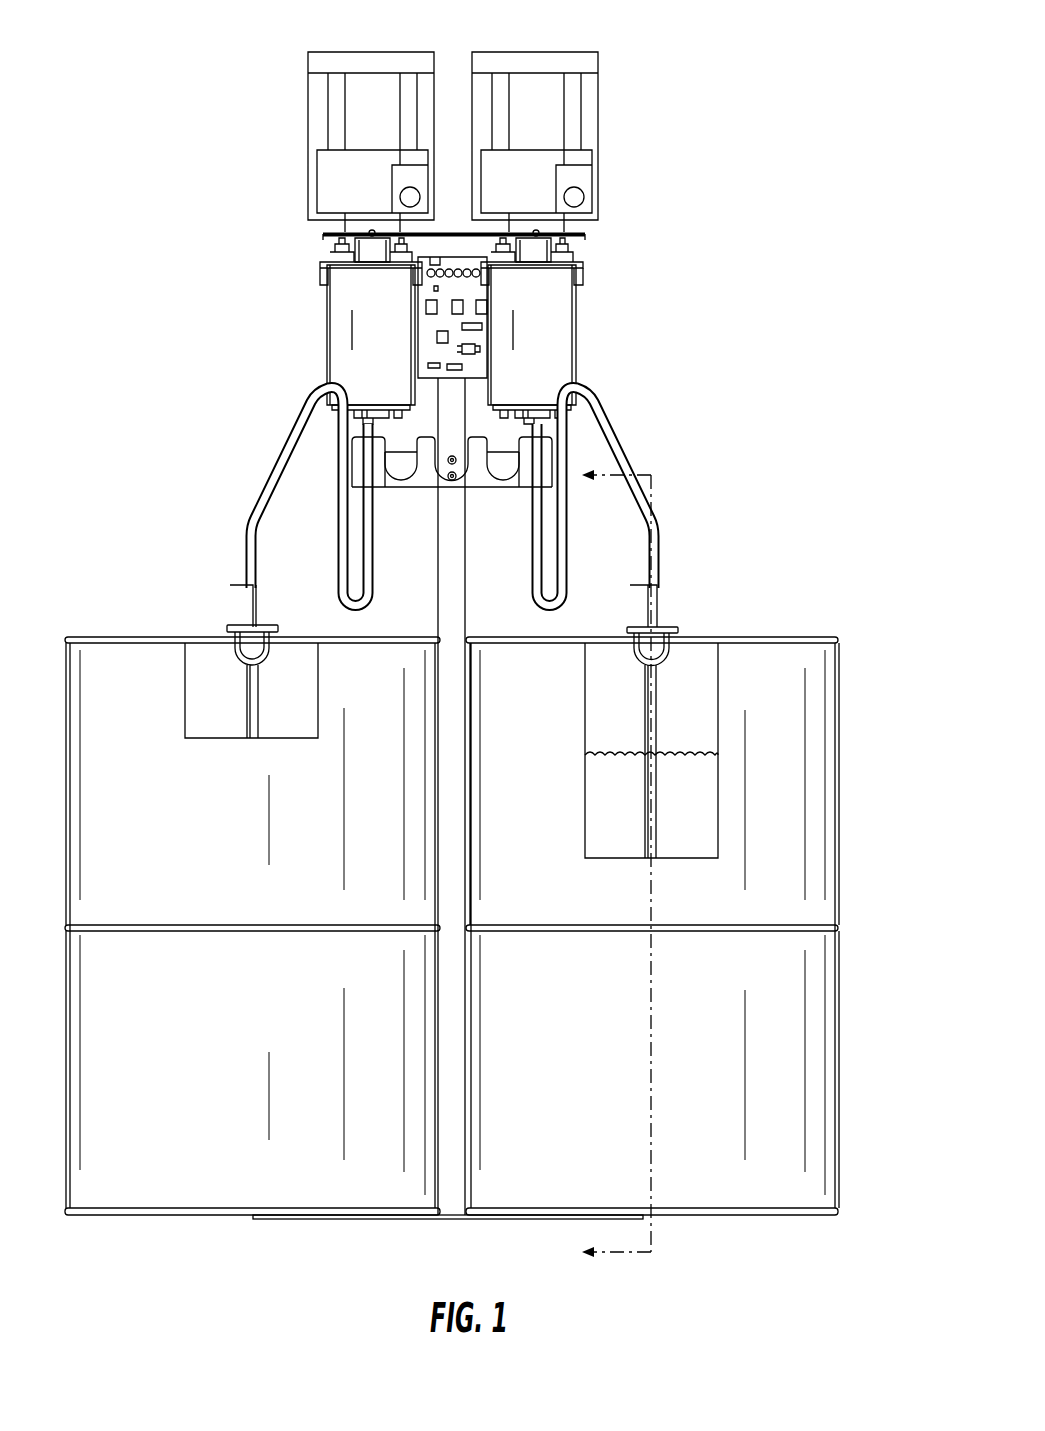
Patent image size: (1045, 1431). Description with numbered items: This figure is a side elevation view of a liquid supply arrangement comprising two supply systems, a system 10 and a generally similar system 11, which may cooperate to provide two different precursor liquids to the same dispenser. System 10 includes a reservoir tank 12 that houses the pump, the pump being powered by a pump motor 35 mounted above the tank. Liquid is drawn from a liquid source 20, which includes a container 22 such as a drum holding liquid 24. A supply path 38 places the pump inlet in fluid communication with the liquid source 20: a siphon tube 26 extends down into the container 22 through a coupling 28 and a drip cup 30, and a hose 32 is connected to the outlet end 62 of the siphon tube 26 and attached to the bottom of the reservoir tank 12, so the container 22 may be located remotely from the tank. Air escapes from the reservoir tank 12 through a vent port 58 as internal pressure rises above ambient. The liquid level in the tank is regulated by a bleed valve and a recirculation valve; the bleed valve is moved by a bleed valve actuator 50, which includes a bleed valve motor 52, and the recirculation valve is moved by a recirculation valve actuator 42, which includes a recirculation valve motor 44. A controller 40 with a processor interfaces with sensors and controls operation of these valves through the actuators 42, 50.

The system 10 is at (485, 654).
The system 11 is at (429, 611).
The reservoir tank 12 is at (594, 215).
The liquid source 20 is at (686, 886).
The container 22 is at (770, 1012).
The liquid 24 is at (690, 784).
The siphon tube 26 is at (652, 722).
The coupling 28 is at (648, 632).
The drip cup 30 is at (652, 658).
The hose 32 is at (504, 493).
The pump motor 35 is at (598, 88).
The supply path 38 is at (660, 525).
The controller 40 is at (442, 292).
The recirculation valve actuator 42 is at (627, 267).
The recirculation valve motor 44 is at (613, 226).
The bleed valve actuator 50 is at (484, 247).
The bleed valve motor 52 is at (522, 134).
The vent port 58 is at (561, 299).
The outlet end 62 is at (657, 607).